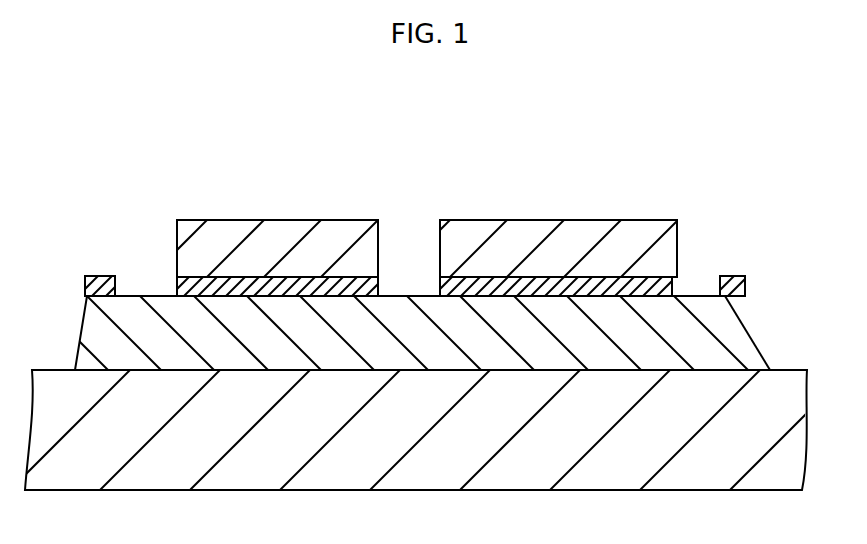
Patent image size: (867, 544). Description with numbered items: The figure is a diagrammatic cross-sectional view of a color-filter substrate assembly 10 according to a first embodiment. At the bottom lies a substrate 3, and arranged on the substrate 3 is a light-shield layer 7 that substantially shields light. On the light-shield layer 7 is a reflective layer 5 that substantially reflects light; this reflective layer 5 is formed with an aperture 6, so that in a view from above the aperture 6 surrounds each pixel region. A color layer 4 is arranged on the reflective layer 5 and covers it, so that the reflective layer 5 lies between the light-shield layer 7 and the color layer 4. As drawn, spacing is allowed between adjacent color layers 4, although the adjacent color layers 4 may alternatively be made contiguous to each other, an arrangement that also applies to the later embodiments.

The color-filter substrate assembly 10 is at (484, 124).
The substrate 3 is at (780, 404).
The light-shield layer 7 is at (747, 330).
The aperture 6 is at (147, 290).
The reflective layer 5 is at (100, 275).
The color layer 4 is at (283, 220).